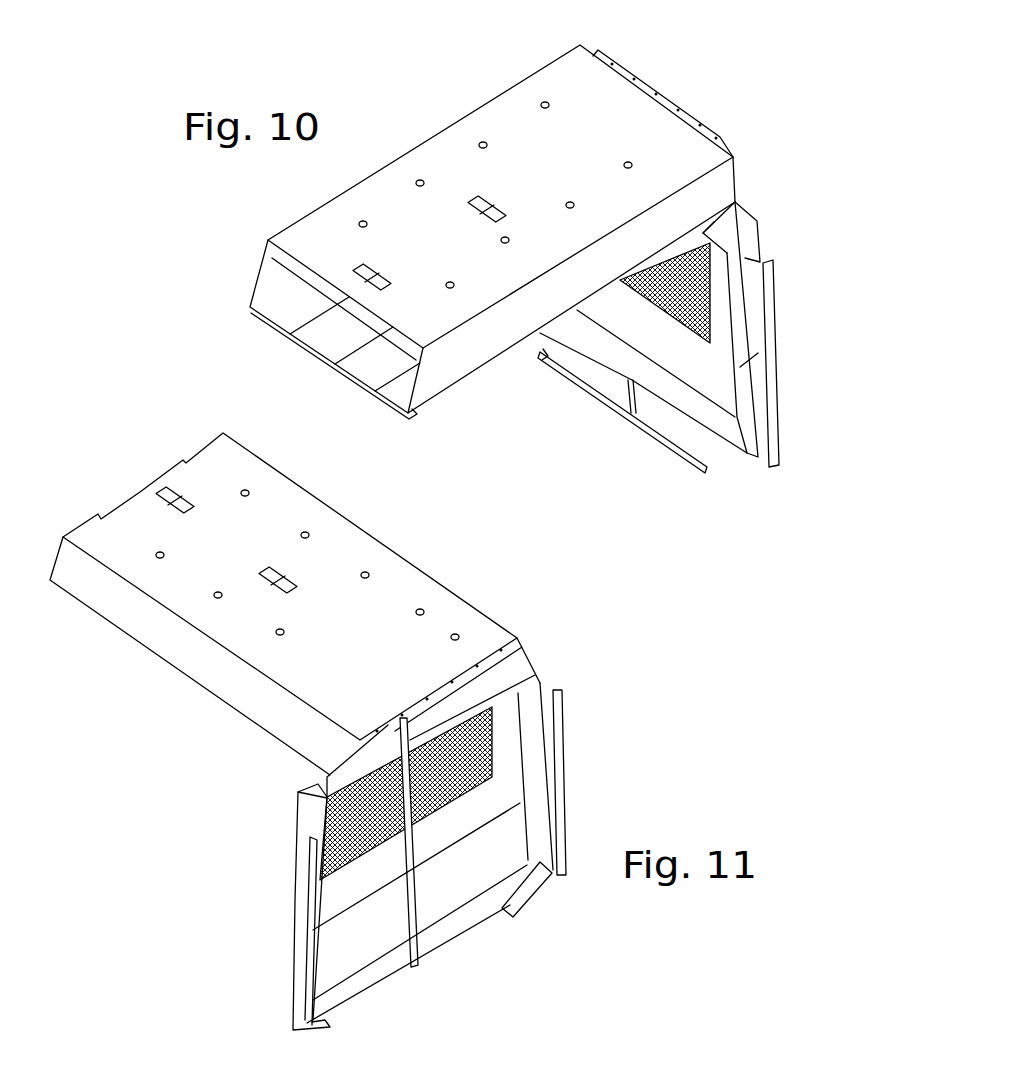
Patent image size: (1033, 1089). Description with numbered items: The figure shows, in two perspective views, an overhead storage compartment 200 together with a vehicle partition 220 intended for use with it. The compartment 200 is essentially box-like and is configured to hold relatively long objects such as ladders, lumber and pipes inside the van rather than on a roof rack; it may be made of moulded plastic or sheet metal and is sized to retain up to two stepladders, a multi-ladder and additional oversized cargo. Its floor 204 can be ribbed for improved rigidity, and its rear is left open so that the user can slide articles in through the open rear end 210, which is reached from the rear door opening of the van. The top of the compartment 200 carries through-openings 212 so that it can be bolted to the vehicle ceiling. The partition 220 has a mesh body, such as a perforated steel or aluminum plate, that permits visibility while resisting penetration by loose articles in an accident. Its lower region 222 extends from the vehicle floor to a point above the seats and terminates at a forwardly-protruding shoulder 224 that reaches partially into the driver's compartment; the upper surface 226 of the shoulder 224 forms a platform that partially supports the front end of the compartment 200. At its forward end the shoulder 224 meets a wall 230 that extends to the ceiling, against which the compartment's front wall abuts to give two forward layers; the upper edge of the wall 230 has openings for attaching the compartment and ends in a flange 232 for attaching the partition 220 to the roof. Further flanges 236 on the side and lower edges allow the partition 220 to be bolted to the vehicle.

In FIG. 10, the overhead storage compartment 200 is at (602, 172).
In FIG. 11, the overhead storage compartment 200 is at (450, 630).
In FIG. 10, the floor 204 is at (250, 306).
In FIG. 10, the open rear end 210 is at (314, 306).
In FIG. 10, the through-openings 212 is at (421, 187).
In FIG. 11, the through-openings 212 is at (219, 592).
In FIG. 10, the vehicle partition 220 is at (757, 256).
In FIG. 11, the vehicle partition 220 is at (584, 740).
In FIG. 10, the lower region 222 is at (682, 342).
In FIG. 11, the lower region 222 is at (292, 860).
In FIG. 10, the forwardly-protruding shoulder 224 is at (748, 198).
In FIG. 11, the forwardly-protruding shoulder 224 is at (318, 785).
In FIG. 11, the upper surface 226 is at (294, 786).
In FIG. 10, the wall 230 is at (737, 205).
In FIG. 11, the wall 230 is at (520, 675).
In FIG. 10, the flange 232 is at (610, 63).
In FIG. 11, the flange 232 is at (516, 638).
In FIG. 10, the flanges 236 is at (768, 337).
In FIG. 11, the flanges 236 is at (305, 950).